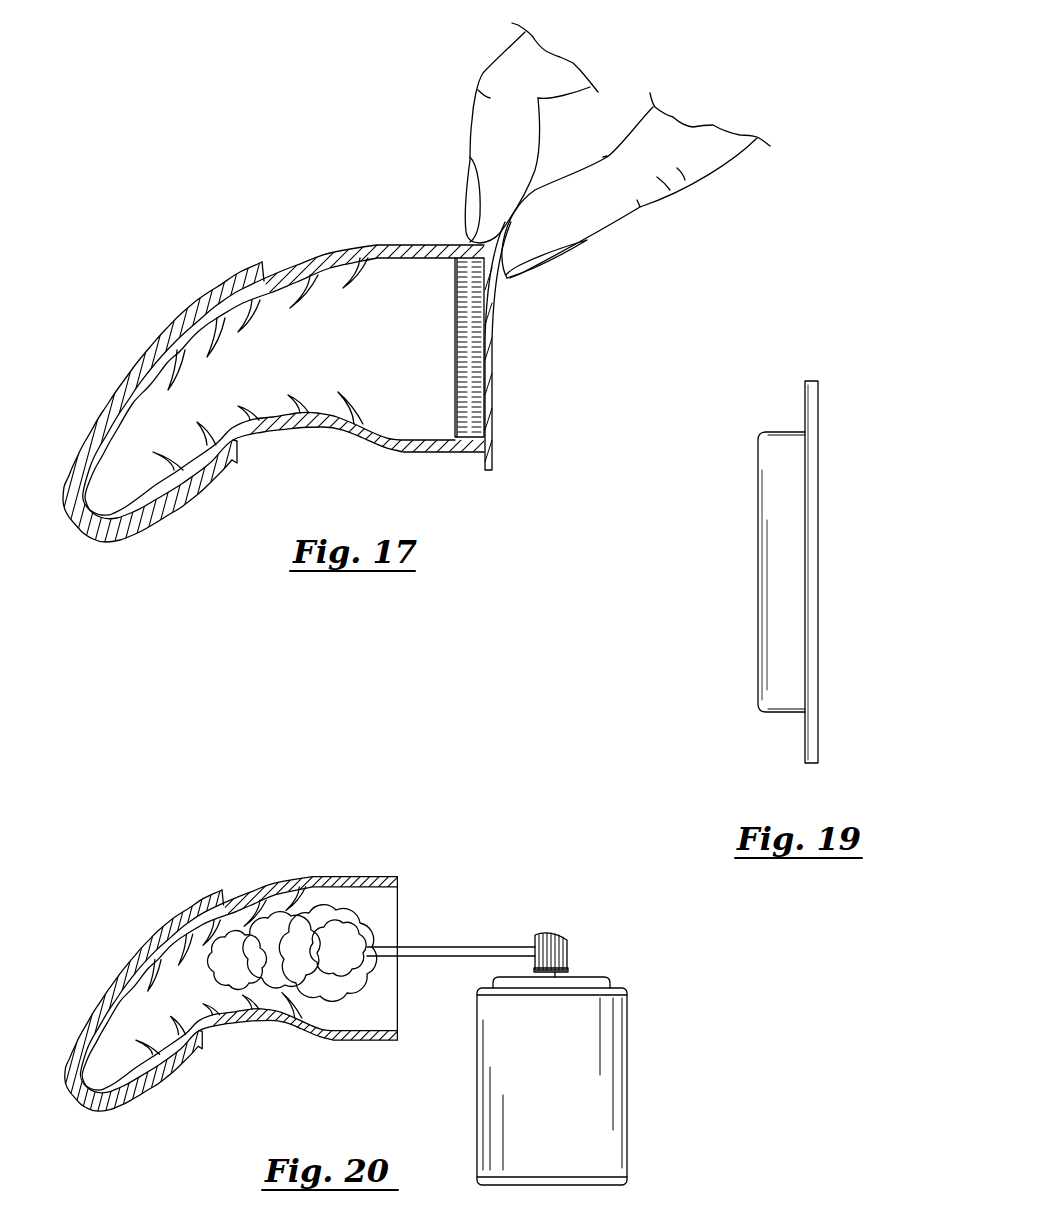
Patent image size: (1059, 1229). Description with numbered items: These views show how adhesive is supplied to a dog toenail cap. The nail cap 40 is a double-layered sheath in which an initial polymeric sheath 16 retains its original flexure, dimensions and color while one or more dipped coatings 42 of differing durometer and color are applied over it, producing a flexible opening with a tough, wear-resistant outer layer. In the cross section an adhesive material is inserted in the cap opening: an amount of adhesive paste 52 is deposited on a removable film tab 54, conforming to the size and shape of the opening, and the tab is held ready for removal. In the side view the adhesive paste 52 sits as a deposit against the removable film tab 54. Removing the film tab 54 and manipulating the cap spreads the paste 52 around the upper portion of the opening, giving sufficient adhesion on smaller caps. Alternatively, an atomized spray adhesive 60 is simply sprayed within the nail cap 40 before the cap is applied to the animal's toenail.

In FIG. 17, the nail cap 40 is at (180, 283).
In FIG. 20, the nail cap 40 is at (229, 999).
In FIG. 20, the dipped coating 42 is at (147, 1003).
In FIG. 20, the polymeric sheath 16 is at (332, 900).
In FIG. 17, the adhesive paste 52 is at (457, 368).
In FIG. 19, the adhesive paste 52 is at (783, 588).
In FIG. 17, the removable film tab 54 is at (493, 283).
In FIG. 19, the removable film tab 54 is at (813, 412).
In FIG. 20, the atomized spray adhesive 60 is at (593, 1107).